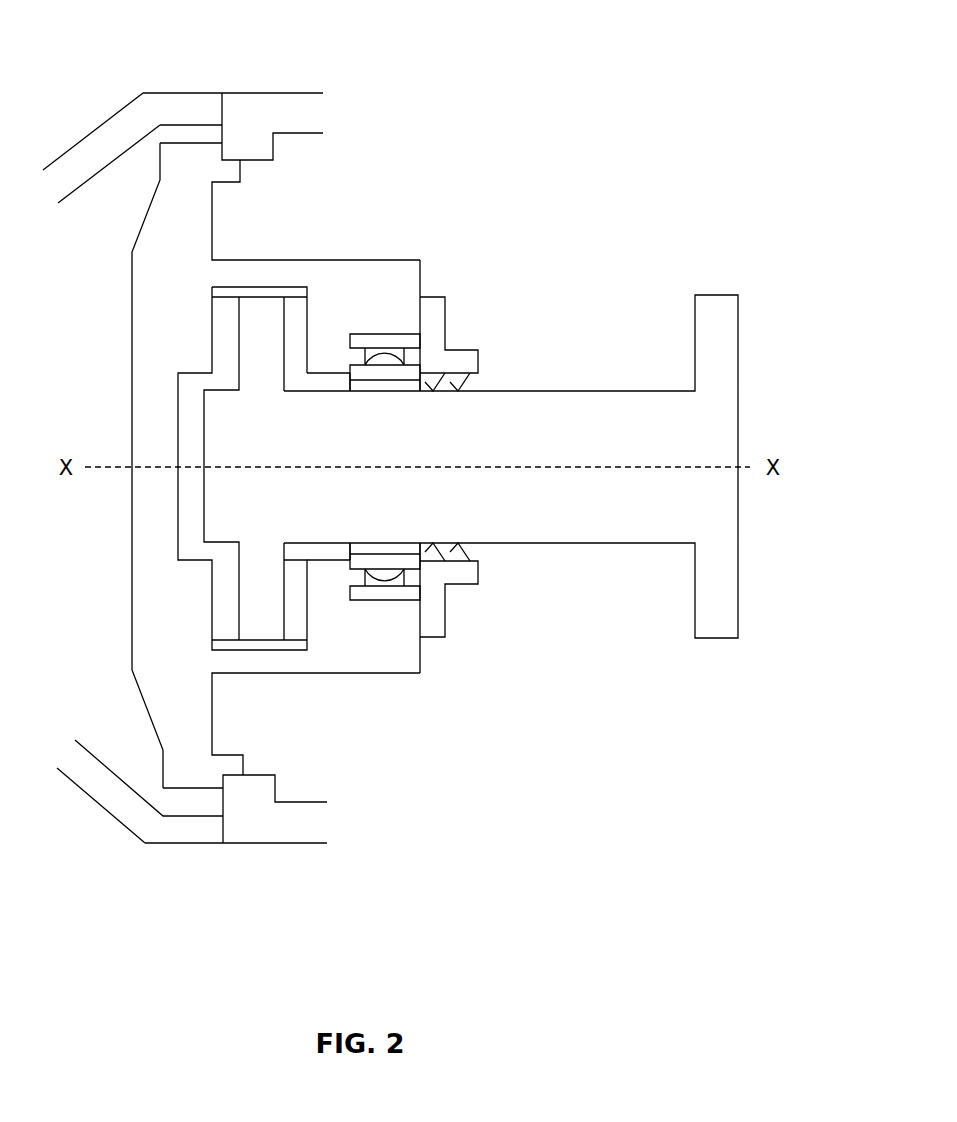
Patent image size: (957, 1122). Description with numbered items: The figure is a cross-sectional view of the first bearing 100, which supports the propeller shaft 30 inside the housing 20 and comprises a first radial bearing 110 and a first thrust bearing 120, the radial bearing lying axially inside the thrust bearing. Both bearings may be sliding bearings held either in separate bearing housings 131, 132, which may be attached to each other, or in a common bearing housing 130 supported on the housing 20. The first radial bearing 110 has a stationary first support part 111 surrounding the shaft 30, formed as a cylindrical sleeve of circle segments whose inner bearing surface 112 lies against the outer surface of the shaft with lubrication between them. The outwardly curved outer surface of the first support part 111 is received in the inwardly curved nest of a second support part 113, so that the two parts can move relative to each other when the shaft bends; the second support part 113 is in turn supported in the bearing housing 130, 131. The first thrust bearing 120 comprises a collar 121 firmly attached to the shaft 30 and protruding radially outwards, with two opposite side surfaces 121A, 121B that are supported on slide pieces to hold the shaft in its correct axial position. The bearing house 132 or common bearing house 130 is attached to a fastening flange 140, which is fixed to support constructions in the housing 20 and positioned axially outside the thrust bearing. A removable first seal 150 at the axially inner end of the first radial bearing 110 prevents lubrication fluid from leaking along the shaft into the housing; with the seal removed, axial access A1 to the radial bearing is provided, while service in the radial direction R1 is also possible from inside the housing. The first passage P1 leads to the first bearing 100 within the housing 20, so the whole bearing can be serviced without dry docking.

The housing 20 is at (185, 430).
The propeller shaft 30 is at (602, 522).
The first bearing 100 is at (410, 133).
The first radial bearing 110 is at (384, 466).
The first support part 111 is at (383, 567).
The bearing surface 112 is at (378, 545).
The second support part 113 is at (395, 588).
The first thrust bearing 120 is at (269, 468).
The collar 121 is at (282, 510).
The side surface 121A is at (283, 345).
The side surface 121B is at (240, 338).
The common bearing housing 130 is at (323, 460).
The bearing housing 131 is at (408, 270).
The bearing housing 132 is at (290, 270).
The fastening flange 140 is at (147, 320).
The first seal 150 is at (428, 308).
The access A1 is at (493, 323).
The first passage P1 is at (482, 193).
The radial direction R1 is at (387, 728).